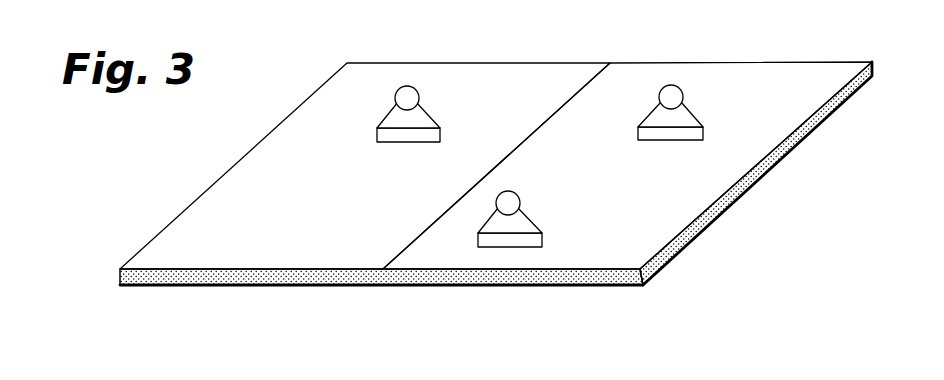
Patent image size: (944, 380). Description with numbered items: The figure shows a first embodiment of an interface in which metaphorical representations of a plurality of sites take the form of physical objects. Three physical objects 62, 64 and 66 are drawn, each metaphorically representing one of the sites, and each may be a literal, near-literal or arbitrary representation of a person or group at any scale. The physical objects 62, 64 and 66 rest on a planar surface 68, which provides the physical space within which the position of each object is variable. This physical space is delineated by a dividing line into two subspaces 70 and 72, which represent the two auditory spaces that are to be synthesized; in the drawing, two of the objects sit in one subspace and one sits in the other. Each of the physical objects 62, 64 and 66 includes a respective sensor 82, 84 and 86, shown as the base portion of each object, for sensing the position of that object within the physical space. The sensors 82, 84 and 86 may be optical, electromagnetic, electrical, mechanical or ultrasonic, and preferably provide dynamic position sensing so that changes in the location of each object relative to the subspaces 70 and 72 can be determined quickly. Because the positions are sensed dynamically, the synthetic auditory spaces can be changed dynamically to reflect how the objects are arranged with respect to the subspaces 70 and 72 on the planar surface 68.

The physical object 62 is at (420, 102).
The physical object 64 is at (688, 107).
The physical object 66 is at (493, 210).
The sensor 82 is at (440, 128).
The sensor 84 is at (705, 128).
The sensor 86 is at (480, 245).
The subspace 70 is at (310, 240).
The subspace 72 is at (600, 230).
The planar surface 68 is at (723, 210).